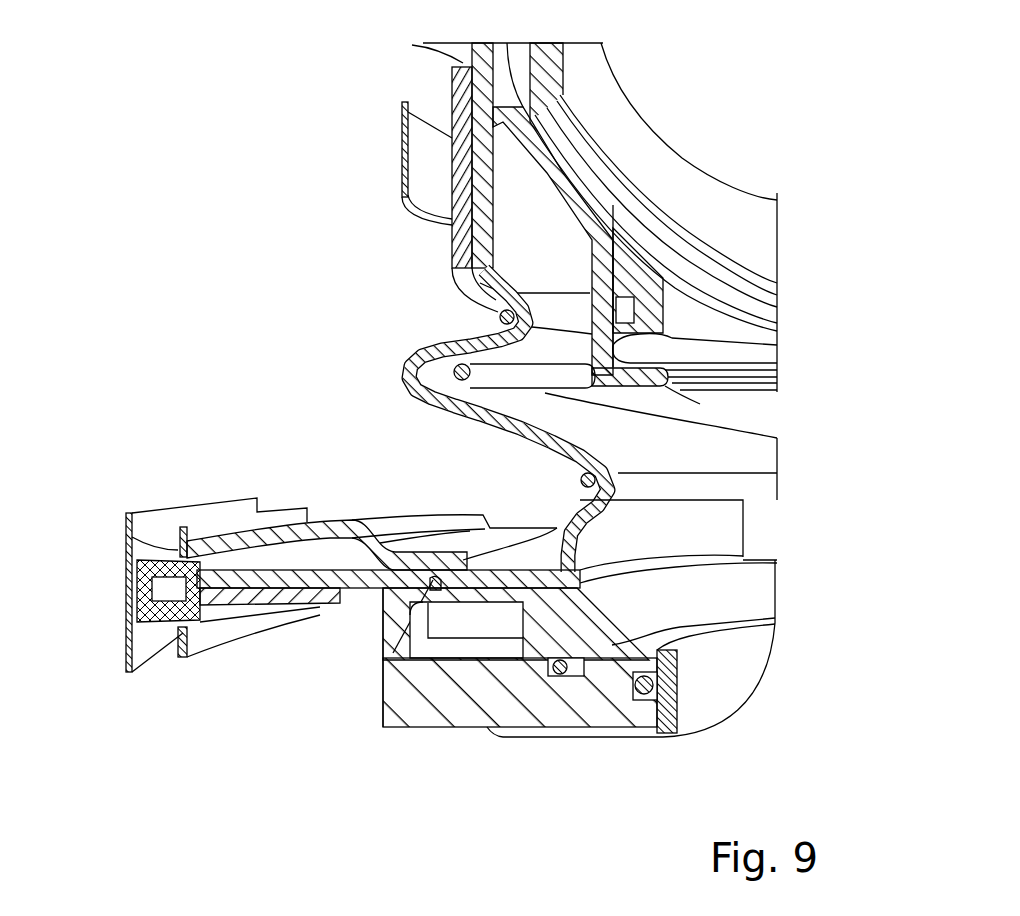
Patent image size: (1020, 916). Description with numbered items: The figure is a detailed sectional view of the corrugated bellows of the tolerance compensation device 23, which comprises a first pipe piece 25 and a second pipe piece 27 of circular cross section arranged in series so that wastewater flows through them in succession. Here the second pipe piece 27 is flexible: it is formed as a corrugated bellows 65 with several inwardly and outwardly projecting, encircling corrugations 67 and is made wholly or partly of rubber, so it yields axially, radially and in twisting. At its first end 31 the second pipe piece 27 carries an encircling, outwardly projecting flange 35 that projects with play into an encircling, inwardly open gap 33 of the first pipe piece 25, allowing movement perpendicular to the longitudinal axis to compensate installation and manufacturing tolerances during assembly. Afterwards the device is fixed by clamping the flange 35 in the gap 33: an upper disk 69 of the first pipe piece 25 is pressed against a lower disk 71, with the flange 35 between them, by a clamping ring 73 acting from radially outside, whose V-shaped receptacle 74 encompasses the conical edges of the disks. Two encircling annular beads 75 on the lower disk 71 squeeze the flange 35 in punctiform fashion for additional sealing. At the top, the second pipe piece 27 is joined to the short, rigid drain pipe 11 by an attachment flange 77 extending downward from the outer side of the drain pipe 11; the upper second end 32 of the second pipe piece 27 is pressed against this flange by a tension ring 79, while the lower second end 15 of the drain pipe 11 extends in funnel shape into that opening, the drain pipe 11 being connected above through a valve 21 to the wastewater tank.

The drain pipe 11 is at (567, 197).
The lower second end 15 is at (545, 393).
The valve 21 is at (715, 278).
The tolerance compensation device 23 is at (286, 226).
The first pipe piece 25 is at (361, 556).
The second pipe piece 27 is at (446, 421).
The first end 31 is at (567, 580).
The second end 32 is at (457, 80).
The gap 33 is at (242, 568).
The flange 35 is at (300, 593).
The corrugated bellows 65 is at (436, 351).
The corrugations 67 is at (585, 480).
The upper disk 69 is at (543, 517).
The lower disk 71 is at (338, 589).
The clamping ring 73 is at (147, 598).
The receptacle 74 is at (170, 552).
The annular beads 75 is at (392, 583).
The attachment flange 77 is at (482, 228).
The tension ring 79 is at (406, 151).